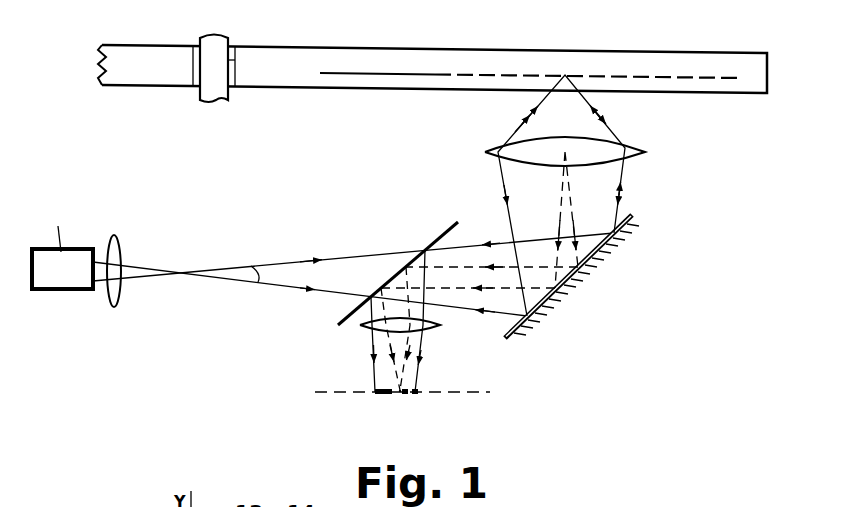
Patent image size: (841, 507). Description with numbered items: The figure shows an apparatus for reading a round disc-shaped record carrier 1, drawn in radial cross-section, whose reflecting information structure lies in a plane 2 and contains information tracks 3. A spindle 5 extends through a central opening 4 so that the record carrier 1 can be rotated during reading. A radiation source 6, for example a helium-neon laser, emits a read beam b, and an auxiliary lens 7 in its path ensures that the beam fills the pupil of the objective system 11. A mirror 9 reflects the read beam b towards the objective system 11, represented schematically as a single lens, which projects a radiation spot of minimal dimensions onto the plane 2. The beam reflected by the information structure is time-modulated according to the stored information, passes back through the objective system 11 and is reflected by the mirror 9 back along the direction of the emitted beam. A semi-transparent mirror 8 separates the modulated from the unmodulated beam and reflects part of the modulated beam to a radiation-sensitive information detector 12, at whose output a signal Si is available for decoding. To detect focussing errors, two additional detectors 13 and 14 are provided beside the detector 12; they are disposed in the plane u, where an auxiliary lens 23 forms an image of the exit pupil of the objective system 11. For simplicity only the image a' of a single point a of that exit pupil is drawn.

The record carrier 1 is at (290, 68).
The plane of the information structure 2 is at (382, 73).
The information tracks 3 is at (470, 75).
The central opening 4 is at (229, 70).
The spindle 5 is at (217, 82).
The radiation source 6 is at (66, 278).
The auxiliary lens 7 is at (113, 296).
The semi-transparent mirror 8 is at (345, 314).
The mirror 9 is at (568, 282).
The objective system 11 is at (520, 147).
The radiation-sensitive information detector 12 is at (378, 396).
The additional detector 13 is at (405, 396).
The additional detector 14 is at (419, 394).
The auxiliary lens 23 is at (378, 330).
The point of the exit pupil a is at (486, 271).
The image of point a a' is at (431, 381).
The read beam b is at (258, 283).
The plane U u is at (413, 395).
The signal Si is at (385, 395).